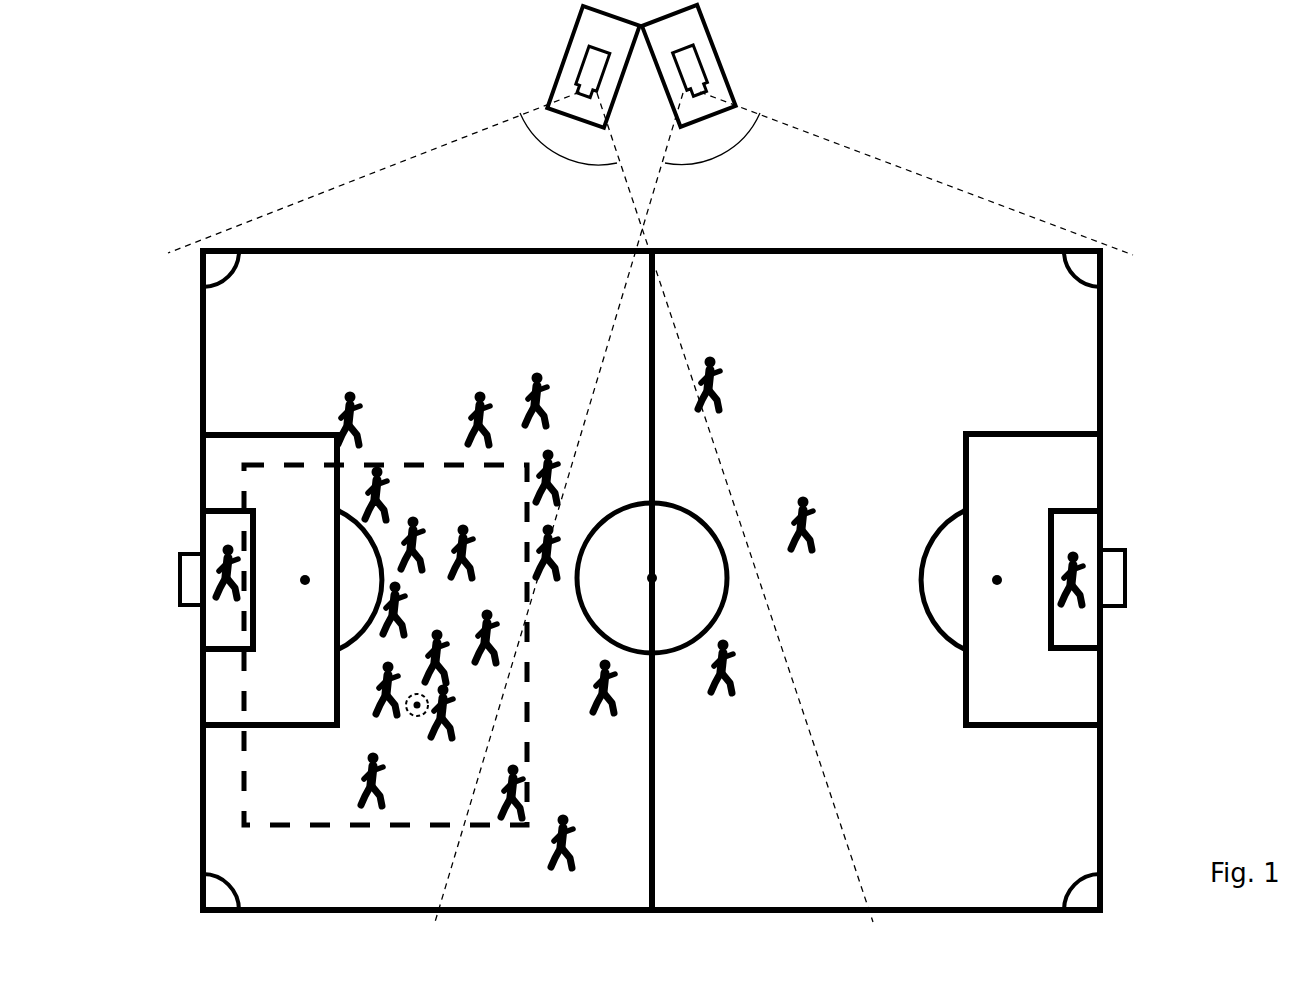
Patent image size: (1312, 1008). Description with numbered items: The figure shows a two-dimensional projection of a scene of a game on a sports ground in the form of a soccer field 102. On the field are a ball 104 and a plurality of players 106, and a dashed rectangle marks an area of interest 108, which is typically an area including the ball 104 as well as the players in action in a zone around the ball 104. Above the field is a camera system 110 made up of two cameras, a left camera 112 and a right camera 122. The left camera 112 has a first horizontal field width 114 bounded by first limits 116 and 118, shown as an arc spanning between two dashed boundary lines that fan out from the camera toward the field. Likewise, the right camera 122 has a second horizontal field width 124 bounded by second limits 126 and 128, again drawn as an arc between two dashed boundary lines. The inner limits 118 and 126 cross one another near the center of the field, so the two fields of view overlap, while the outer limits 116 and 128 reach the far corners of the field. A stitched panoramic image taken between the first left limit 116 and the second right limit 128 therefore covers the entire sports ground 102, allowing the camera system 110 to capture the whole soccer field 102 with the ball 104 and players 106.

The soccer field 102 is at (967, 348).
The ball 104 is at (420, 718).
The players 106 is at (335, 402).
The area of interest 108 is at (528, 733).
The camera system 110 is at (702, 66).
The left camera 112 is at (567, 74).
The first horizontal field width 114 is at (540, 152).
The first left limit 116 is at (455, 140).
The first limit 118 is at (633, 222).
The right camera 122 is at (712, 80).
The second horizontal field width 124 is at (733, 147).
The second limit 126 is at (657, 227).
The second right limit 128 is at (858, 148).